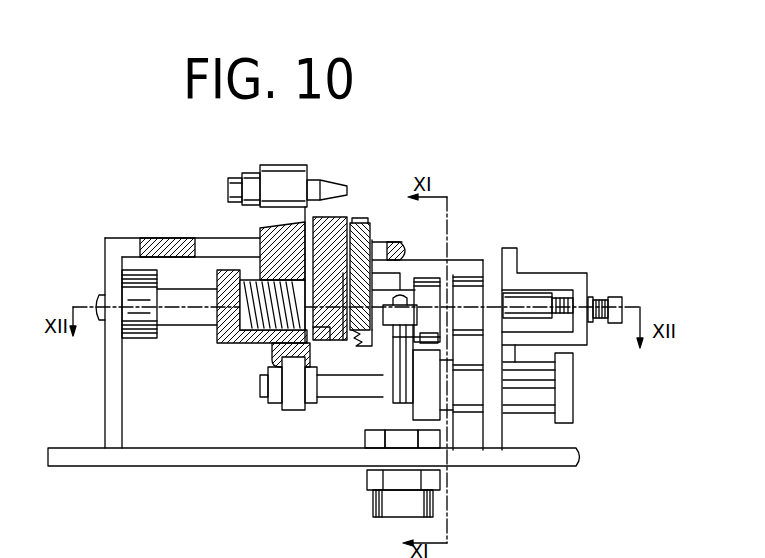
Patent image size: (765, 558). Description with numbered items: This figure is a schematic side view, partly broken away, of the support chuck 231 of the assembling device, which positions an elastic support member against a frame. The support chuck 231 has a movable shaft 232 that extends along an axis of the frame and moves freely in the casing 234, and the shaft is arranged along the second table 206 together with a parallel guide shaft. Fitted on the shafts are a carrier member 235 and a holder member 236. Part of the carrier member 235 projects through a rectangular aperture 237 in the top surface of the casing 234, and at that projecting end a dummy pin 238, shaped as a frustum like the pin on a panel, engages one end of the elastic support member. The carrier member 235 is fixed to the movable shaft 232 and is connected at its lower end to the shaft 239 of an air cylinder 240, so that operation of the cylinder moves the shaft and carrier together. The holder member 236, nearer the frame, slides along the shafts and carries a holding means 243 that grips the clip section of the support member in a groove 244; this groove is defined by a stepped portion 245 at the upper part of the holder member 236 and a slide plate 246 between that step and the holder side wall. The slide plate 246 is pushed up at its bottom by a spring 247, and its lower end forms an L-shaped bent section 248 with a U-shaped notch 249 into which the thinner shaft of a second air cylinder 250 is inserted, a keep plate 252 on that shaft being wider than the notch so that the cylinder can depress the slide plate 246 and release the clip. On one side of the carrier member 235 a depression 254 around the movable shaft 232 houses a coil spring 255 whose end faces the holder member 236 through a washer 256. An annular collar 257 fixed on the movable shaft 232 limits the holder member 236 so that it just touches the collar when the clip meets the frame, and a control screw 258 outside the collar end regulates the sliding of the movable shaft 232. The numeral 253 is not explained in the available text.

The support chuck 231 is at (161, 144).
The second table 206 is at (69, 452).
The casing 234 is at (123, 238).
The rectangular aperture 237 is at (214, 248).
The input gear 253 is at (217, 340).
The movable shaft 232 is at (157, 322).
The coil spring 255 is at (272, 366).
The depression 254 is at (269, 336).
The carrier member 235 is at (288, 167).
The dummy pin 238 is at (345, 196).
The holder member 236 is at (352, 215).
The holding means 243 is at (393, 214).
The groove 244 is at (370, 216).
The washer 256 is at (300, 342).
The stepped portion 245 is at (406, 226).
The slide plate 246 is at (430, 278).
The keep plate 252 is at (458, 290).
The annular collar 257 is at (498, 248).
The control screw 258 is at (597, 300).
The air cylinder 240 is at (556, 420).
The shaft of air cylinder 239 is at (299, 398).
The spring 247 is at (352, 345).
The bent section 248 is at (392, 345).
The U-shaped notch 249 is at (395, 390).
The air cylinder 250 is at (376, 500).